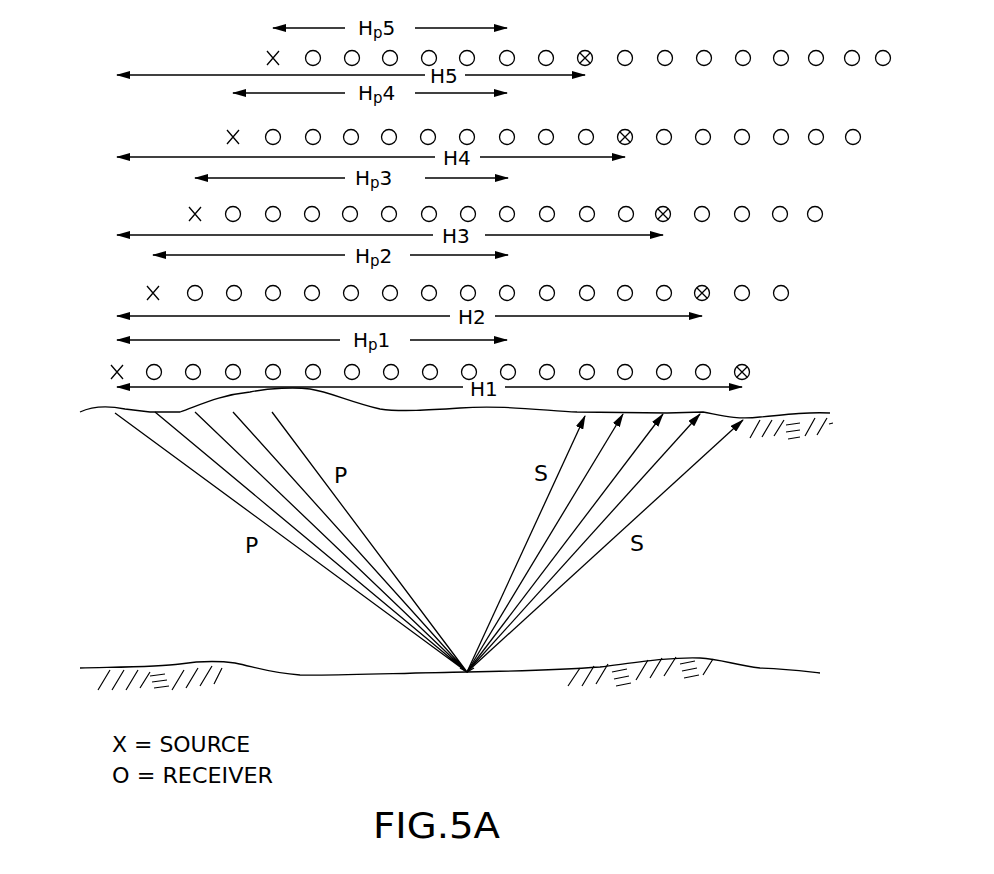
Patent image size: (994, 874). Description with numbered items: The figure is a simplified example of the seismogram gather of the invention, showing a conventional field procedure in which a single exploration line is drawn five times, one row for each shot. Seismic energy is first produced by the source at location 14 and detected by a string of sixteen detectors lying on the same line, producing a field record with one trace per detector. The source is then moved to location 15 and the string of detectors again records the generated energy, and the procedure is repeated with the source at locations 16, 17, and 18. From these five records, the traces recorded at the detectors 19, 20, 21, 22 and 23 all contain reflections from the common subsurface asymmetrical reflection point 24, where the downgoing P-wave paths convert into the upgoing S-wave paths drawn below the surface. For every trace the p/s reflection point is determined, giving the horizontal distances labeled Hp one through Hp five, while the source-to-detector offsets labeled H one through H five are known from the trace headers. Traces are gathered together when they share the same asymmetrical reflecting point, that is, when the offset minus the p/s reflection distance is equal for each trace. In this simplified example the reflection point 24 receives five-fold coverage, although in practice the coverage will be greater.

The source location 14 is at (111, 371).
The source location 15 is at (149, 291).
The source location 16 is at (190, 213).
The source location 17 is at (227, 136).
The source location 18 is at (268, 55).
The detector 19 is at (750, 368).
The detector 20 is at (707, 285).
The detector 21 is at (666, 206).
The detector 22 is at (631, 129).
The detector 23 is at (590, 51).
The common subsurface asymmetrical reflection point 24 is at (467, 676).